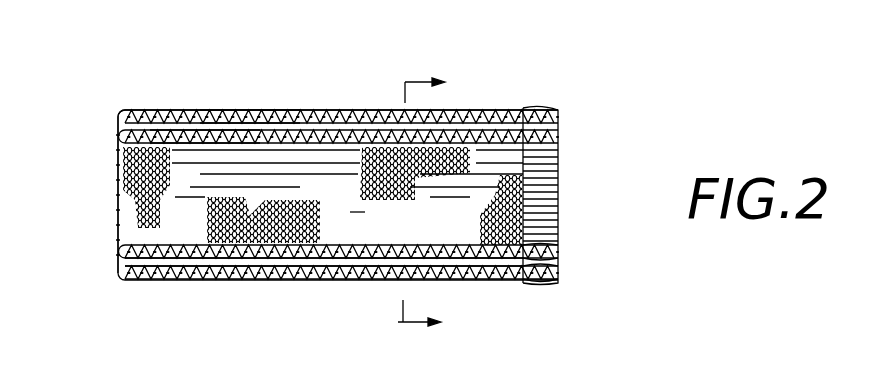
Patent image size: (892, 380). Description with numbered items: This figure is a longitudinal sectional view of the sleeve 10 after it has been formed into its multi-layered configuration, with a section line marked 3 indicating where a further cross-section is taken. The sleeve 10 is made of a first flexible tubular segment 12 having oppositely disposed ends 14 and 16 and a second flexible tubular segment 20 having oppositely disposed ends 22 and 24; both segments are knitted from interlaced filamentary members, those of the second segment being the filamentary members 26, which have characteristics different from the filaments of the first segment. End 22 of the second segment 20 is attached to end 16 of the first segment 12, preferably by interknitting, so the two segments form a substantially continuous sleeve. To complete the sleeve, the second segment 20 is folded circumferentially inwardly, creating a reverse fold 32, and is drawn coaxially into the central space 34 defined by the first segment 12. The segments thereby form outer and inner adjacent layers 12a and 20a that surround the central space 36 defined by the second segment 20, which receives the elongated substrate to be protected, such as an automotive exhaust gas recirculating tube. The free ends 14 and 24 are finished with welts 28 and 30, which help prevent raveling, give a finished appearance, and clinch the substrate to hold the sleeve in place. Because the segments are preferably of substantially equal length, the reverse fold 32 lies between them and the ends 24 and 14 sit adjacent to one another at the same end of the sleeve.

The sleeve 10 is at (513, 80).
The first flexible tubular segment 12 is at (378, 110).
The outer adjacent layer 12a is at (255, 110).
The end of first segment 14 is at (553, 108).
The end of first segment 16 is at (130, 112).
The second flexible tubular segment 20 is at (325, 135).
The inner adjacent layer 20a is at (200, 134).
The end of second segment 22 is at (128, 148).
The end of second segment 24 is at (562, 252).
The filamentary members 26 is at (210, 222).
The welt 28 is at (562, 266).
The welt 30 is at (548, 153).
The reverse fold 32 is at (118, 123).
The central space 34 is at (378, 263).
The central space 36 is at (357, 210).
The section line 3- 3 is at (428, 204).